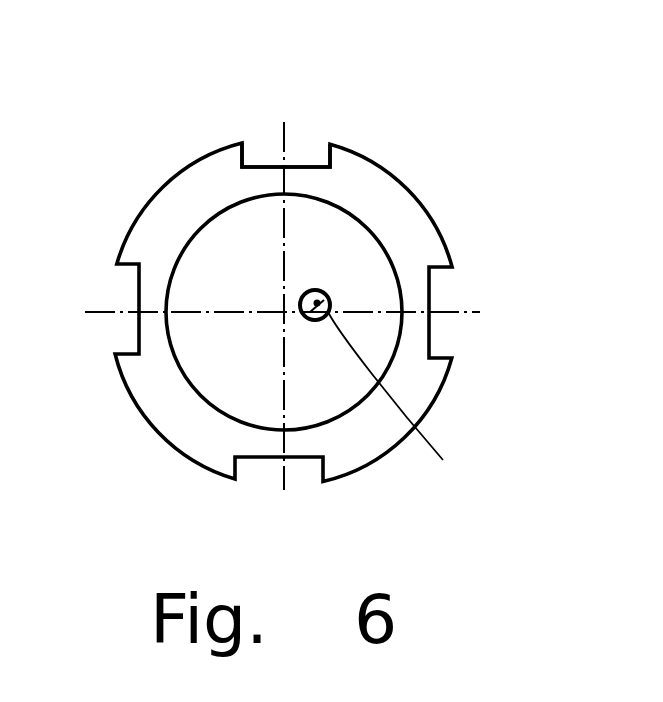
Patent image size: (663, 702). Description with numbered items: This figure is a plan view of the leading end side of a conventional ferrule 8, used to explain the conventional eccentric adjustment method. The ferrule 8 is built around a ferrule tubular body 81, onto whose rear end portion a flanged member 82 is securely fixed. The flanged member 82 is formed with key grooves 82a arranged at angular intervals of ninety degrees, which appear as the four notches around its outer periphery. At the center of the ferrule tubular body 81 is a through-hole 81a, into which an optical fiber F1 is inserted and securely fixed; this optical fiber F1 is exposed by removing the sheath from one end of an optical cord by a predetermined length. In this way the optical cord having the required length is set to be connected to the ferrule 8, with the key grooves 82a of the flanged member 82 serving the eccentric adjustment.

The ferrule 8 is at (196, 124).
The ferrule tubular body 81 is at (205, 376).
The through-hole 81a is at (337, 302).
The flanged member 82 is at (436, 223).
The key grooves 82a is at (305, 167).
The optical fiber F1 is at (405, 392).